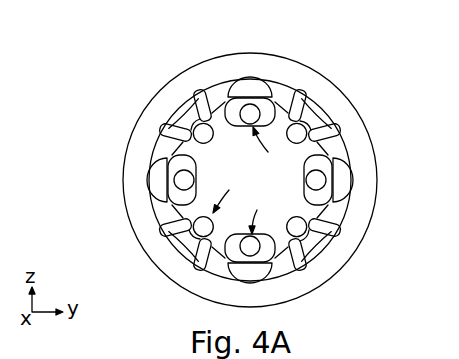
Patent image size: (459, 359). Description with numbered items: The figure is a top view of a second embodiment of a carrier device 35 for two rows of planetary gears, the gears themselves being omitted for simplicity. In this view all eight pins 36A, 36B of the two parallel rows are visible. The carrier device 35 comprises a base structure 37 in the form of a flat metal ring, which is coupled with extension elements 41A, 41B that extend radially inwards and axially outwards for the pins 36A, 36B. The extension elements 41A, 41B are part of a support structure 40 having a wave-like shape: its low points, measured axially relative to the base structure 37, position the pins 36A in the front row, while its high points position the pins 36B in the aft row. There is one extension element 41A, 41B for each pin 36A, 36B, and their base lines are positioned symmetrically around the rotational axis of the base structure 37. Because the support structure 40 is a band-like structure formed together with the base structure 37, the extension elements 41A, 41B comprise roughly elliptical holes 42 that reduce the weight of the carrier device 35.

The carrier device 35 is at (108, 165).
The base structure 37 is at (376, 205).
The pin 36A is at (195, 97).
The pin 36B is at (262, 106).
The support structure 40 is at (183, 146).
The hole 42 is at (366, 290).
The extension element 41A is at (227, 193).
The extension element 41B is at (266, 180).